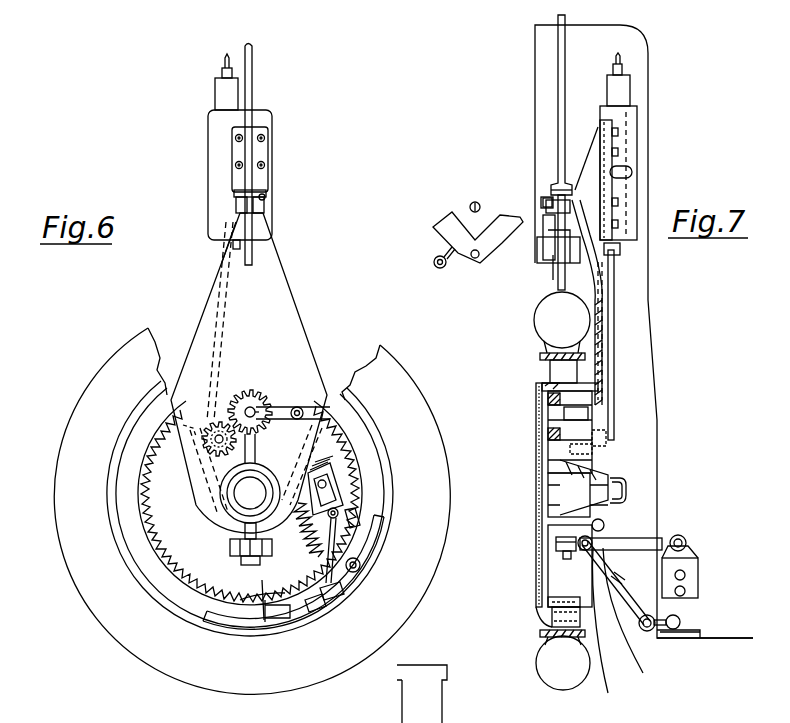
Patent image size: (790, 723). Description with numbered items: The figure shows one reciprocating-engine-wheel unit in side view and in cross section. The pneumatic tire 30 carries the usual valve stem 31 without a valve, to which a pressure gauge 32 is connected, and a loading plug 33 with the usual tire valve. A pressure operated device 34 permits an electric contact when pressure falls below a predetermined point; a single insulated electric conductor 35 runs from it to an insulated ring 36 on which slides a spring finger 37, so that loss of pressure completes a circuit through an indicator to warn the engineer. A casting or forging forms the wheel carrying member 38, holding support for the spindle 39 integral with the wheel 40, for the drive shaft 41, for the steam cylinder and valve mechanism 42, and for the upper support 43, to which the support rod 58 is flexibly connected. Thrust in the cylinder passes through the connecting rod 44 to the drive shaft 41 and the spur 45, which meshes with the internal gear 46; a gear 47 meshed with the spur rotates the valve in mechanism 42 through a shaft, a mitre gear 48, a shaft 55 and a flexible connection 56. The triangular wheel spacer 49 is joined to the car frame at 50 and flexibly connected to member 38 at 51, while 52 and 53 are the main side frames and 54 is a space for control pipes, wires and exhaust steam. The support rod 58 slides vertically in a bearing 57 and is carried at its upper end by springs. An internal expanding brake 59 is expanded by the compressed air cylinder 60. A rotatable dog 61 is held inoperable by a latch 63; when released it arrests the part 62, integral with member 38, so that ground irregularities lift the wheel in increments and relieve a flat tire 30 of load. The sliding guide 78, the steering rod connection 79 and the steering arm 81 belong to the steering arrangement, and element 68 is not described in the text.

In FIG. 6, the pneumatic tire 30 is at (252, 511).
In FIG. 7, the pneumatic tire 30 is at (562, 491).
In FIG. 6, the valve stem 31 is at (330, 603).
In FIG. 6, the pressure gauge 32 is at (360, 568).
In FIG. 6, the loading plug 33 is at (320, 607).
In FIG. 6, the pressure operated device 34 is at (280, 618).
In FIG. 6, the insulated electric conductor 35 is at (258, 598).
In FIG. 7, the insulated ring 36 is at (540, 560).
In FIG. 7, the spring finger 37 is at (615, 455).
In FIG. 6, the wheel carrying member 38 is at (249, 373).
In FIG. 7, the wheel carrying member 38 is at (677, 508).
In FIG. 6, the spindle 39 is at (250, 514).
In FIG. 7, the spindle 39 is at (548, 493).
In FIG. 7, the wheel 40 is at (537, 443).
In FIG. 7, the drive shaft 41 is at (548, 410).
In FIG. 6, the steam cylinder and valve mechanism 42 is at (218, 133).
In FIG. 7, the steam cylinder and valve mechanism 42 is at (620, 143).
In FIG. 6, the upper support 43 is at (262, 206).
In FIG. 7, the upper support 43 is at (551, 197).
In FIG. 7, the connecting rod 44 is at (618, 355).
In FIG. 6, the spur 45 is at (252, 390).
In FIG. 7, the spur 45 is at (538, 400).
In FIG. 6, the internal gear 46 is at (150, 535).
In FIG. 7, the internal gear 46 is at (548, 600).
In FIG. 6, the gear 47 is at (219, 422).
In FIG. 6, the mitre gear 48 is at (190, 448).
In FIG. 7, the mitre gear 48 is at (605, 445).
In FIG. 7, the triangular wheel spacer 49 is at (640, 537).
In FIG. 7, the joint to car frame 50 is at (690, 545).
In FIG. 7, the flexible connection 51 is at (635, 618).
In FIG. 7, the main side frame 52 is at (695, 636).
In FIG. 7, the main side frame 53 is at (538, 265).
In FIG. 7, the space 54 is at (692, 577).
In FIG. 6, the shaft 55 is at (212, 330).
In FIG. 6, the flexible connection 56 is at (222, 262).
In FIG. 7, the bearing 57 is at (556, 255).
In FIG. 6, the support rod 58 is at (252, 84).
In FIG. 7, the support rod 58 is at (558, 96).
In FIG. 6, the internal expanding brake 59 is at (373, 517).
In FIG. 7, the internal expanding brake 59 is at (614, 626).
In FIG. 6, the compressed air cylinder 60 is at (338, 473).
In FIG. 7, the rotatable dog 61 is at (437, 227).
In FIG. 7, the arrestable part of wheel carrying member 62 is at (475, 203).
In FIG. 7, the latch 63 is at (438, 257).
In FIG. 6, the battery 68 is at (422, 694).
In FIG. 7, the sliding guide 78 is at (685, 618).
In FIG. 7, the steering rod connection 79 is at (648, 631).
In FIG. 7, the steering arm 81 is at (618, 568).